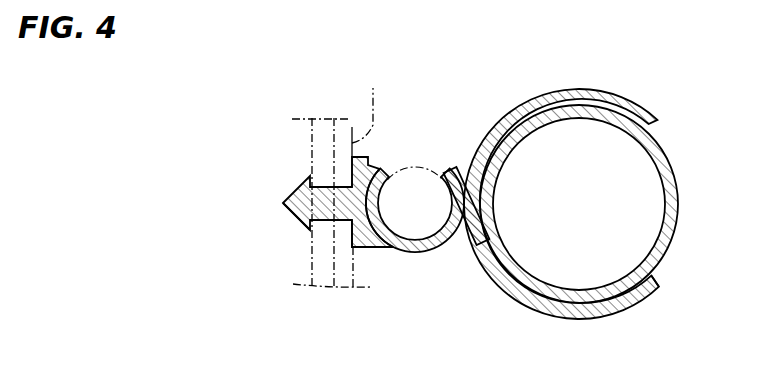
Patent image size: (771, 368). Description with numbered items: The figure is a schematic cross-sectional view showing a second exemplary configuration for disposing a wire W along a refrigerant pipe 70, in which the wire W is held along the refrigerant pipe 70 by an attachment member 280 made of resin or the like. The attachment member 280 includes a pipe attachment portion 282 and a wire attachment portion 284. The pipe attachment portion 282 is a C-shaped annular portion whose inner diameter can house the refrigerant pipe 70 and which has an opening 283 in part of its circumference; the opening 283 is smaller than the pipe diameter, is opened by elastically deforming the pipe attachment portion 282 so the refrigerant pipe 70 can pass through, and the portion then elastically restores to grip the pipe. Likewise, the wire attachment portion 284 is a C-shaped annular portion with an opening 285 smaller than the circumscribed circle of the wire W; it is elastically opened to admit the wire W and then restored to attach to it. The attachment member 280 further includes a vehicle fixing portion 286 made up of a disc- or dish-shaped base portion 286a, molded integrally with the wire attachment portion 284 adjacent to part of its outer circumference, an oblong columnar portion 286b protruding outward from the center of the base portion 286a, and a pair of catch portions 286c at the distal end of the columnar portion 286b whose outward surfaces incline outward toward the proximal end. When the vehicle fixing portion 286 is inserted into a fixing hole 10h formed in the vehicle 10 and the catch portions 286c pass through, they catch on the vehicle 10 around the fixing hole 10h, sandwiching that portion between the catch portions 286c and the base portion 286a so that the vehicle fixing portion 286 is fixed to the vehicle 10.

The vehicle 10 is at (339, 175).
The fixing hole 10h is at (334, 118).
The wire W is at (412, 165).
The refrigerant pipe 70 is at (680, 213).
The attachment member 280 is at (506, 102).
The pipe attachment portion 282 is at (614, 318).
The opening 283 is at (661, 277).
The wire attachment portion 284 is at (422, 254).
The opening 285 is at (446, 165).
The vehicle fixing portion 286 is at (307, 175).
The base portion 286a is at (368, 250).
The columnar portion 286b is at (333, 224).
The catch portions 286c is at (297, 218).